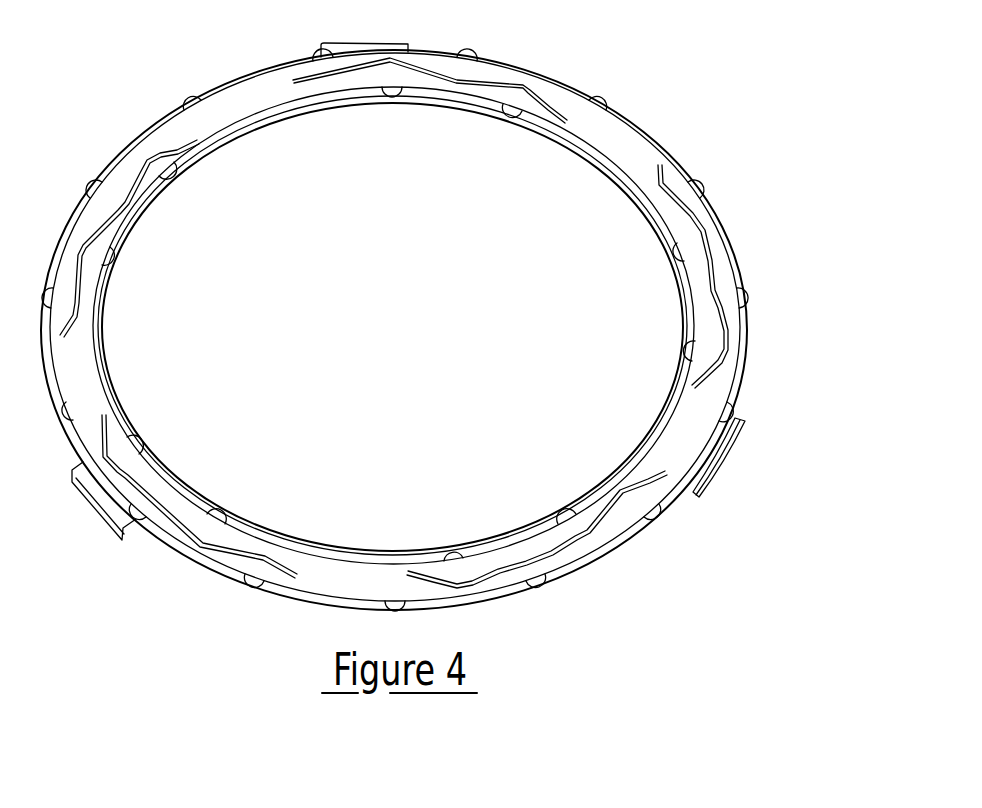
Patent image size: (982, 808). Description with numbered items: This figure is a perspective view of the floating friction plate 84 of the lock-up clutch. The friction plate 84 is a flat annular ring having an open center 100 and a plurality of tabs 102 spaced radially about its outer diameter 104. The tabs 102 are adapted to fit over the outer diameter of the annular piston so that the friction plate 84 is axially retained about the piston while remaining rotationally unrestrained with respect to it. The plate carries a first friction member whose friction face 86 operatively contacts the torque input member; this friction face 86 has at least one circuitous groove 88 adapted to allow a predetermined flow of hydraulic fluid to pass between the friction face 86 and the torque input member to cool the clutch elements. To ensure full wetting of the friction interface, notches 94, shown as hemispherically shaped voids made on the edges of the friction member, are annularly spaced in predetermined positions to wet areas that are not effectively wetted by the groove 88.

The friction plate 84 is at (601, 100).
The friction face 86 is at (657, 137).
The notch 94 is at (690, 190).
The circuitous groove 88 is at (708, 238).
The outer diameter 104 is at (747, 377).
The tab 102 is at (730, 460).
The open center 100 is at (606, 353).